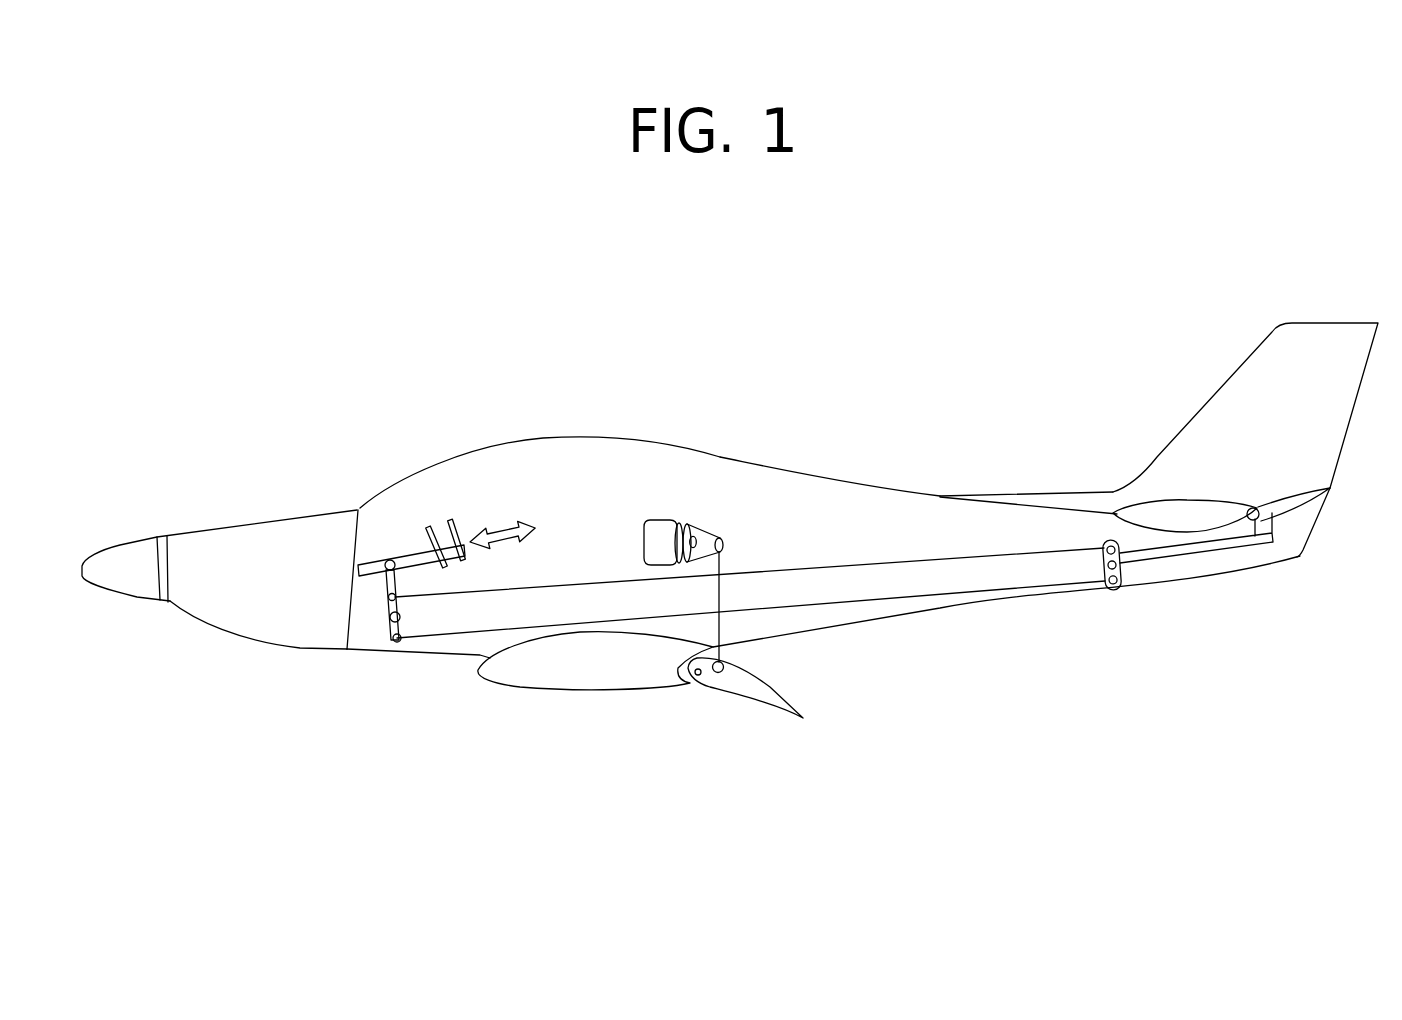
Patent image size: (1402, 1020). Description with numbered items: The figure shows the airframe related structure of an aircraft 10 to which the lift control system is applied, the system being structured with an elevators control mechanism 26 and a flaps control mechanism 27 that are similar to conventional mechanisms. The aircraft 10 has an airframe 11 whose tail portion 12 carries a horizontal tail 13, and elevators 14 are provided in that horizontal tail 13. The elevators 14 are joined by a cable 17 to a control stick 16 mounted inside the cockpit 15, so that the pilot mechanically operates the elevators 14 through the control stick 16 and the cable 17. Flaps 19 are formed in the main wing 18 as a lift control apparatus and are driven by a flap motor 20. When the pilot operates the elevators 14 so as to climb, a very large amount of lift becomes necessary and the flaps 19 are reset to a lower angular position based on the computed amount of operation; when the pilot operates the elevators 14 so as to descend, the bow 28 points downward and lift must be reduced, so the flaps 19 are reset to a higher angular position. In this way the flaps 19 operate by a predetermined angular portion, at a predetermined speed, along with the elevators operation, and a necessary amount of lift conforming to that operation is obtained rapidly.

The aircraft 10 is at (396, 335).
The airframe 11 is at (773, 468).
The tail portion 12 is at (1242, 596).
The horizontal tail 13 is at (1198, 500).
The elevators 14 is at (1301, 558).
The cockpit 15 is at (542, 420).
The control stick 16 is at (403, 553).
The cable 17 is at (885, 600).
The main wing 18 is at (567, 692).
The flaps 19 is at (753, 705).
The flap motor 20 is at (660, 520).
The elevators control mechanism 26 is at (399, 677).
The flaps control mechanism 27 is at (762, 521).
The bow 28 is at (196, 506).